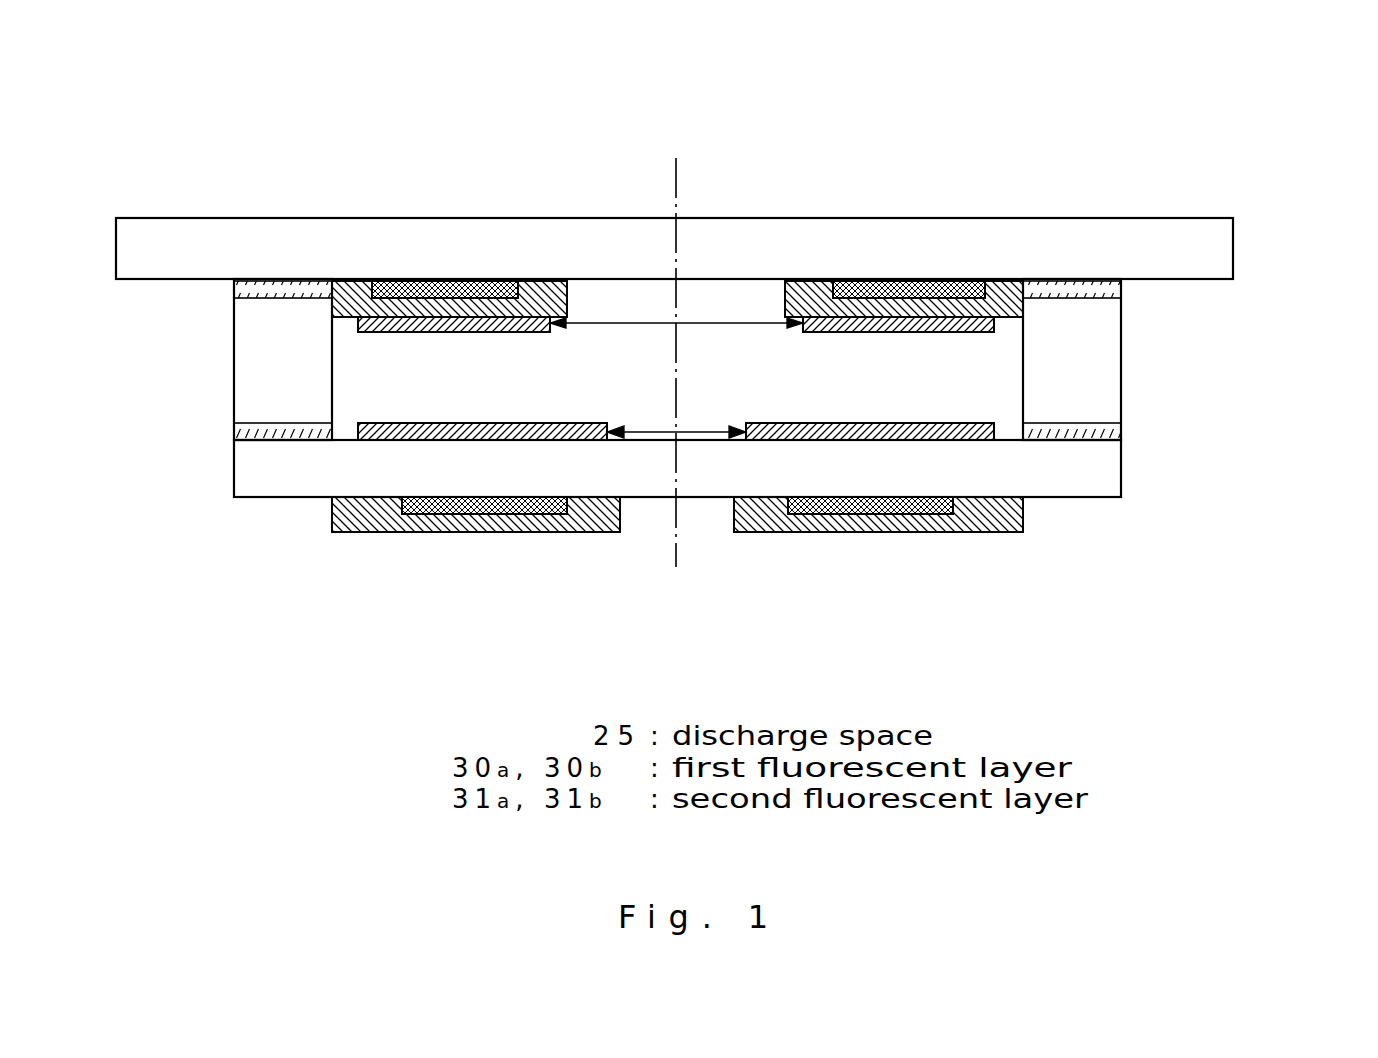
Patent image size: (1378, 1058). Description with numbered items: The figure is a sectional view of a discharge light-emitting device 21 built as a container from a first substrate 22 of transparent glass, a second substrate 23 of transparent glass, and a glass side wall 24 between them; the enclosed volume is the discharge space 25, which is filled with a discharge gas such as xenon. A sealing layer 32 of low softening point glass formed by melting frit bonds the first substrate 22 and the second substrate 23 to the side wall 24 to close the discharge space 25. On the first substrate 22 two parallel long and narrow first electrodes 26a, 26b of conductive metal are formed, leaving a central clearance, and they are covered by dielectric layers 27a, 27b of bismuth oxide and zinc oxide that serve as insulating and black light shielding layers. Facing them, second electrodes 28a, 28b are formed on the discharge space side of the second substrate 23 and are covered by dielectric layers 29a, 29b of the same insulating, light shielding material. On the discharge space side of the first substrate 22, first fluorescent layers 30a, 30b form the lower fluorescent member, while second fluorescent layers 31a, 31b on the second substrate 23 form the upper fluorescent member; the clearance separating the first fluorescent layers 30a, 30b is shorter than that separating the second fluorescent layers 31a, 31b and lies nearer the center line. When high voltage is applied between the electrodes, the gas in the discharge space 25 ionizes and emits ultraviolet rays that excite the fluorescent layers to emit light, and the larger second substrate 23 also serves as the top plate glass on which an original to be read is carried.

The discharge light-emitting device 21 is at (776, 58).
The first substrate 22 is at (1107, 470).
The second substrate 23 is at (1217, 244).
The side wall 24 is at (247, 373).
The discharge space 25 is at (617, 300).
The first electrode 26a is at (535, 517).
The first electrode 26b is at (927, 517).
The dielectric layer 27a is at (382, 520).
The dielectric layer 27b is at (812, 522).
The second electrode 28a is at (401, 290).
The second electrode 28b is at (903, 292).
The dielectric layer 29a is at (503, 292).
The dielectric layer 29b is at (800, 292).
The first fluorescent layer 30a is at (372, 443).
The first fluorescent layer 30b is at (982, 443).
The second fluorescent layer 31a is at (362, 314).
The second fluorescent layer 31b is at (988, 324).
The sealing layer 32 is at (234, 286).